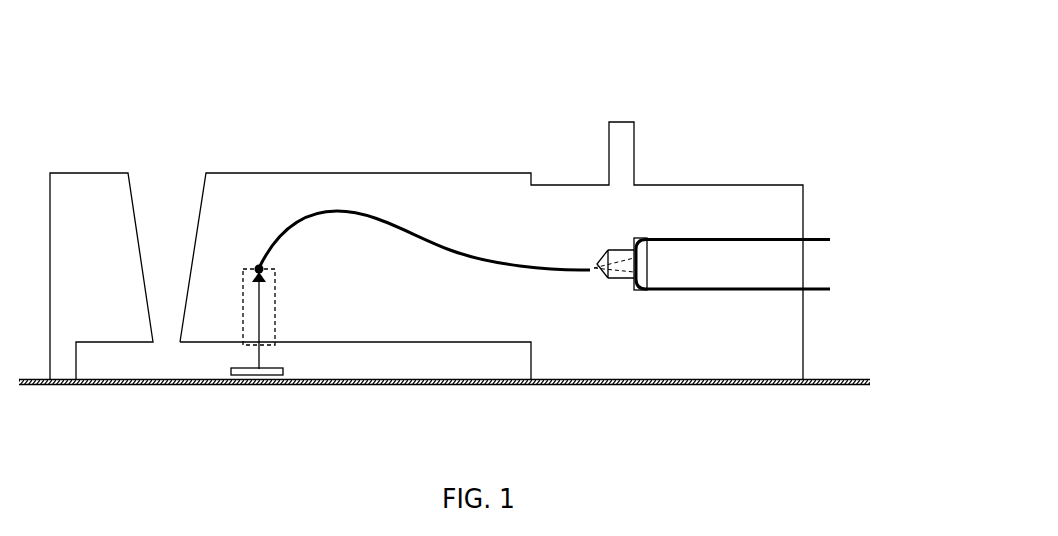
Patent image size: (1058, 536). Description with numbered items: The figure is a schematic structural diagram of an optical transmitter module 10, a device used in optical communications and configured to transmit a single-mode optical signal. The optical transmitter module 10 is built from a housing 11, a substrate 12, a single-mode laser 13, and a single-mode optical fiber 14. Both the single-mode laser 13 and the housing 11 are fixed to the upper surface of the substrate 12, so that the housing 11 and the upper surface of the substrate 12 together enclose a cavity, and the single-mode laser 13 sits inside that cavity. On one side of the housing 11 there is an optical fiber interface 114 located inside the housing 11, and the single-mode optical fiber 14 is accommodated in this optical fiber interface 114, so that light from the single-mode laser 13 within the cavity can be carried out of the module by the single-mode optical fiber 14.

The optical transmitter module 10 is at (127, 225).
The housing 11 is at (218, 173).
The substrate 12 is at (200, 425).
The single-mode laser 13 is at (270, 383).
The optical fiber interface 114 is at (638, 238).
The single-mode optical fiber 14 is at (687, 263).